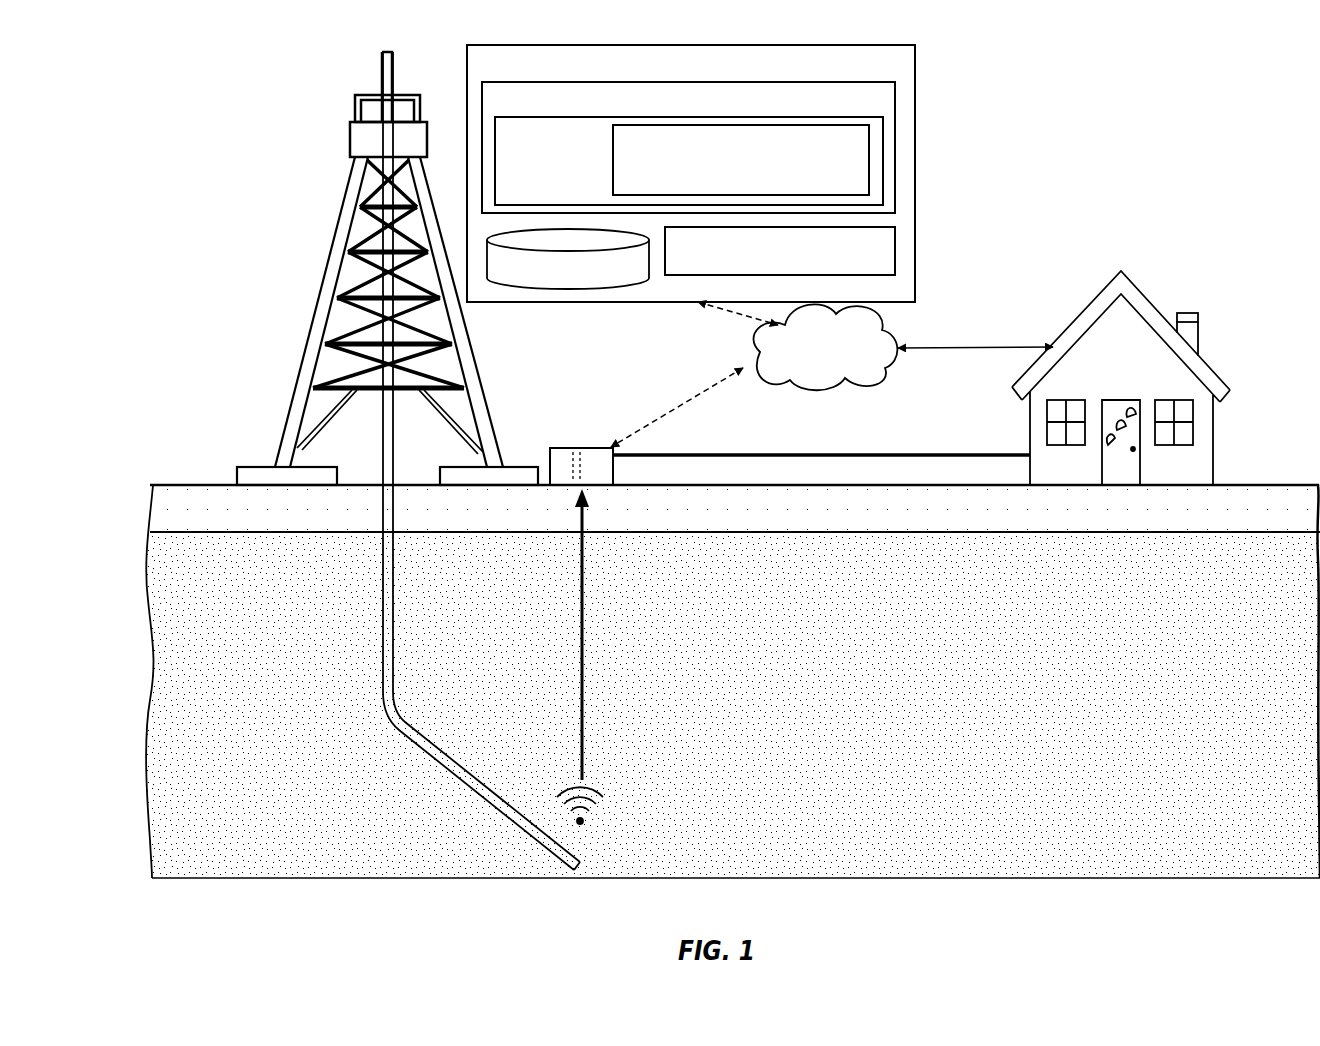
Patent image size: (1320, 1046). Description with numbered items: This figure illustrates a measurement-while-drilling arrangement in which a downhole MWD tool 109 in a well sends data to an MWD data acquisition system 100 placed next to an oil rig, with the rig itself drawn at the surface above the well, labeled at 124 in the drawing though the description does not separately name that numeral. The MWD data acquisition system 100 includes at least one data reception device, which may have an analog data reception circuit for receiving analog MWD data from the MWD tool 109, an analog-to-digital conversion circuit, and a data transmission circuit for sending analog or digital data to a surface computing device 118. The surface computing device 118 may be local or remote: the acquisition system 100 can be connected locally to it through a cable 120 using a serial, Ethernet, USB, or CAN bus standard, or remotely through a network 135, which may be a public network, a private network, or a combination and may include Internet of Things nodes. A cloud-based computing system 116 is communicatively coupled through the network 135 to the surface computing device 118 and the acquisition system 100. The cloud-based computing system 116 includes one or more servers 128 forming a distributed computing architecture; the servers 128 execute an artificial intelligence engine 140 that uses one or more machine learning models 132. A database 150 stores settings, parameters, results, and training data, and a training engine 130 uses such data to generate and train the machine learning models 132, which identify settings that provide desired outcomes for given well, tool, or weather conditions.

The MWD data acquisition system 100 is at (598, 445).
The MWD tool 109 is at (542, 838).
The cloud-based computing system 116 is at (691, 173).
The surface computing device 118 is at (1122, 270).
The cable 120 is at (860, 452).
The drilling rig 124 is at (383, 452).
The servers 128 is at (688, 147).
The training engine 130 is at (780, 251).
The machine learning models 132 is at (741, 160).
The network 135 is at (825, 347).
The artificial intelligence engine 140 is at (548, 161).
The database 150 is at (568, 259).